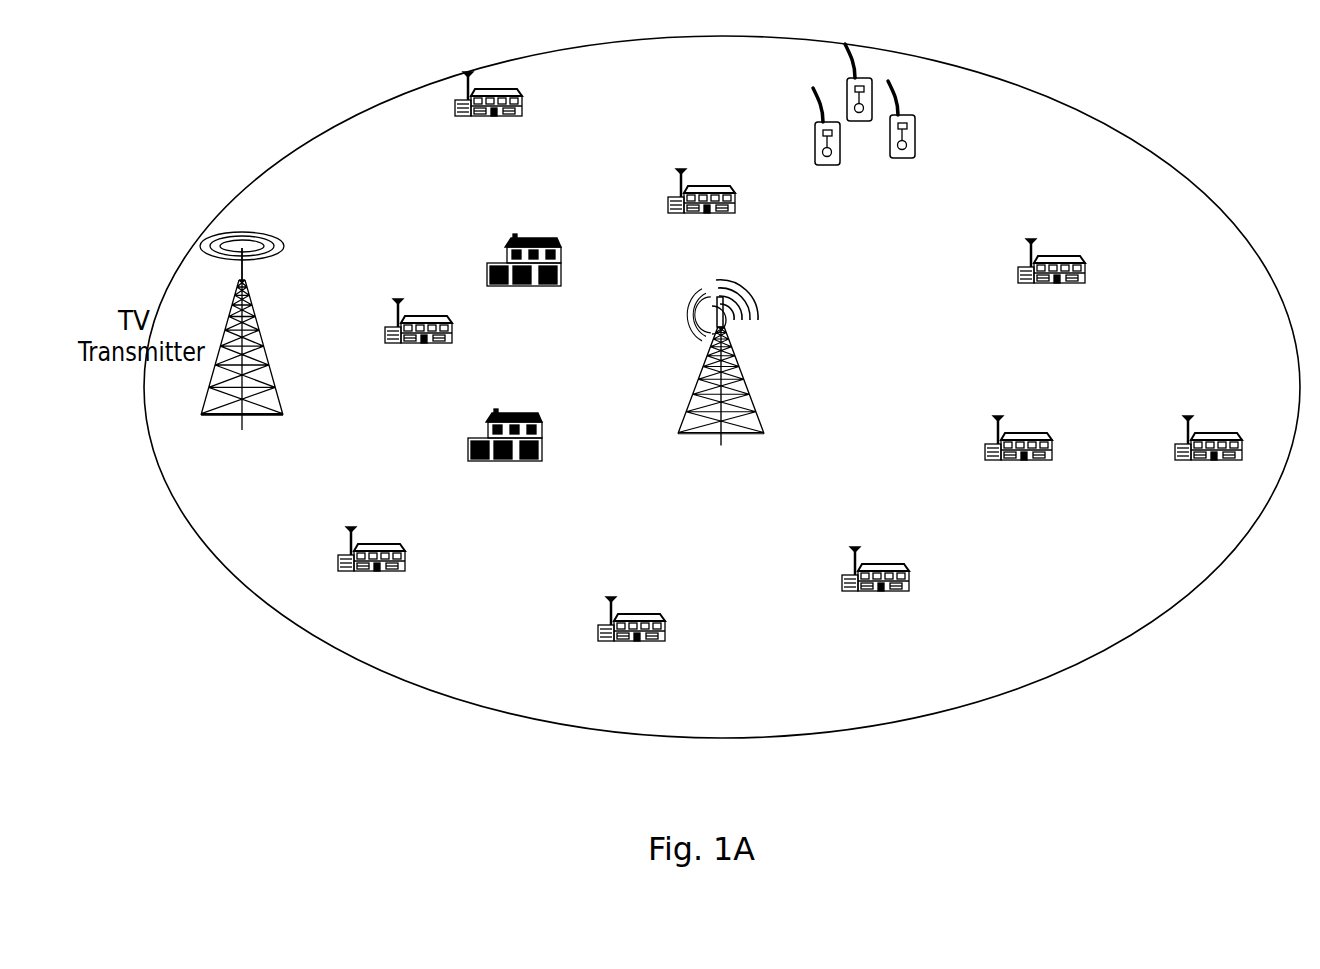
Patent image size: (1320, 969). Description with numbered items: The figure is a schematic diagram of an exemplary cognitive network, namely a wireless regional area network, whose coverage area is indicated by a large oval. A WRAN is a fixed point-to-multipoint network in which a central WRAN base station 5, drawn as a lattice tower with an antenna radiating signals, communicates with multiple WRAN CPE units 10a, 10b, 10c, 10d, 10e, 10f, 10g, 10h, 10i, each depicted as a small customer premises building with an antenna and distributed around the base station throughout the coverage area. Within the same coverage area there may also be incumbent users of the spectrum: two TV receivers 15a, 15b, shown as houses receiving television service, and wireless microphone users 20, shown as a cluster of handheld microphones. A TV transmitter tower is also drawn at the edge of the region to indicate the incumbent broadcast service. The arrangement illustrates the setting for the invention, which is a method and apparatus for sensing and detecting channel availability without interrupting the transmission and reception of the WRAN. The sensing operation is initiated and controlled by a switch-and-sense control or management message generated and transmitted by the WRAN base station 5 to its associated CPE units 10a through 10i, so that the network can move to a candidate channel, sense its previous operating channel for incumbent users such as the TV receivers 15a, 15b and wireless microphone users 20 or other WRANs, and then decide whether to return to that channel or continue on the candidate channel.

The WRAN base station 5 is at (760, 296).
The wireless microphone users 20 is at (920, 74).
The TV receiver 15a is at (515, 416).
The TV receiver 15b is at (540, 238).
The WRAN CPE unit 10a is at (400, 546).
The WRAN CPE unit 10b is at (658, 618).
The WRAN CPE unit 10c is at (905, 567).
The WRAN CPE unit 10d is at (1040, 433).
The WRAN CPE unit 10e is at (1230, 433).
The WRAN CPE unit 10f is at (1078, 257).
The WRAN CPE unit 10g is at (733, 205).
The WRAN CPE unit 10h is at (520, 93).
The WRAN CPE unit 10i is at (412, 367).